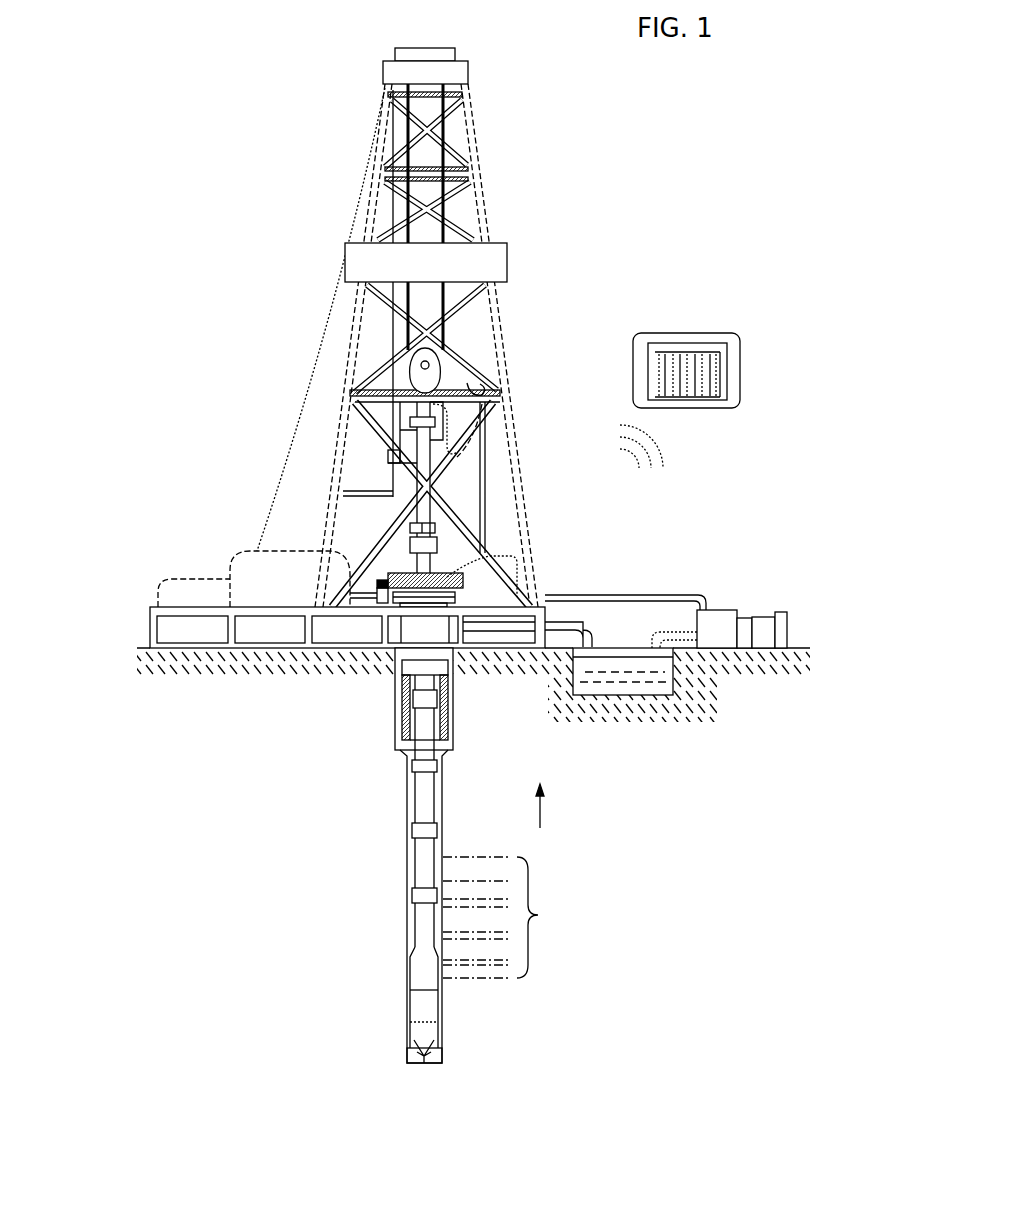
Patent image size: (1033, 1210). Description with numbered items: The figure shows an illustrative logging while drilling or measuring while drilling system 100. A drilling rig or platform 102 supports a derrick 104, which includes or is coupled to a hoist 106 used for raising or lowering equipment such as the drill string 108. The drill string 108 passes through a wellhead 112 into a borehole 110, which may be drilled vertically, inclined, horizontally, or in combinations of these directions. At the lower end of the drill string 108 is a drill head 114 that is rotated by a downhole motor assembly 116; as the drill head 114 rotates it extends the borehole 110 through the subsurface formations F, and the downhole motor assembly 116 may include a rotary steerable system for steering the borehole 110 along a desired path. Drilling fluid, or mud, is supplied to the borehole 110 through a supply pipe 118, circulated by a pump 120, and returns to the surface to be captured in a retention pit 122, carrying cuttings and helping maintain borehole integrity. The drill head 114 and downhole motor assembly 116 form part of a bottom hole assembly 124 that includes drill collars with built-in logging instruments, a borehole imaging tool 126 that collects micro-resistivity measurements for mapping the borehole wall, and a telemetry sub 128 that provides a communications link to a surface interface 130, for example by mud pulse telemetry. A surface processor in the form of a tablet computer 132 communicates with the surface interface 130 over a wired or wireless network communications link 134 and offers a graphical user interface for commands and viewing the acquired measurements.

The logging while drilling system 100 is at (248, 196).
The drilling rig or platform 102 is at (150, 628).
The derrick 104 is at (485, 215).
The hoist 106 is at (442, 368).
The drill string 108 is at (433, 784).
The borehole 110 is at (443, 822).
The wellhead 112 is at (450, 573).
The drill head 114 is at (440, 1042).
The downhole motor assembly 116 is at (418, 1041).
The supply pipe 118 is at (628, 597).
The pump 120 is at (735, 610).
The retention pit 122 is at (615, 680).
The bottom hole assembly 124 is at (420, 1001).
The borehole imaging tool 126 is at (428, 1014).
The telemetry sub 128 is at (419, 980).
The surface interface 130 is at (433, 527).
The tablet computer 132 is at (686, 357).
The network communications link 134 is at (662, 455).